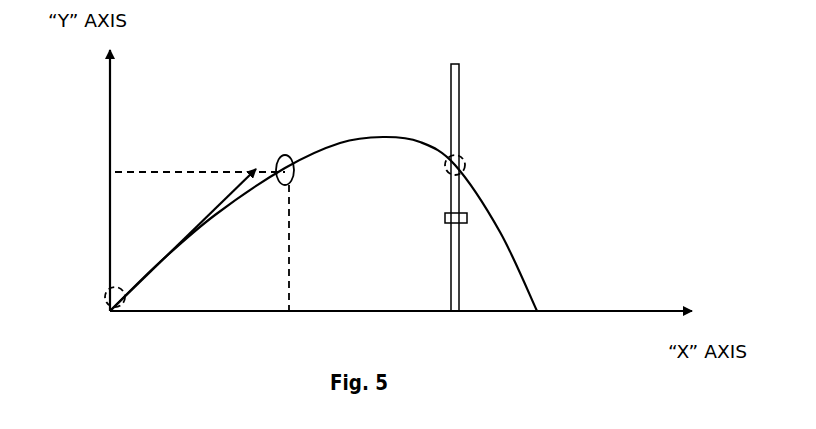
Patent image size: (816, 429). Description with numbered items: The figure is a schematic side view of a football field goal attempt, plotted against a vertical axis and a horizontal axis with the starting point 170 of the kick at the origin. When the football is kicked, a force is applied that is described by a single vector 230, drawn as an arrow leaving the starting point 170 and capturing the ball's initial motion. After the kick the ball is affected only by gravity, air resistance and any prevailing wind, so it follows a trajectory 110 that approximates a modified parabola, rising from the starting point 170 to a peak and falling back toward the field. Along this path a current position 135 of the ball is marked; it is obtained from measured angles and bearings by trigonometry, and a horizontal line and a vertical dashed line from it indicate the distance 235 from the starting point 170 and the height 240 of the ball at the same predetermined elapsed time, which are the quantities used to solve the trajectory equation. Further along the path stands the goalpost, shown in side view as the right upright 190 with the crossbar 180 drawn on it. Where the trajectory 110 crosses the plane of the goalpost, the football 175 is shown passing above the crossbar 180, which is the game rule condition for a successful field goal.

The trajectory 110 is at (365, 140).
The current position 135 is at (284, 152).
The starting point 170 is at (108, 283).
The football 175 is at (466, 163).
The crossbar 180 is at (468, 217).
The right upright 190 is at (472, 77).
The vector 230 is at (183, 240).
The distance 235 is at (167, 173).
The height 240 is at (284, 264).